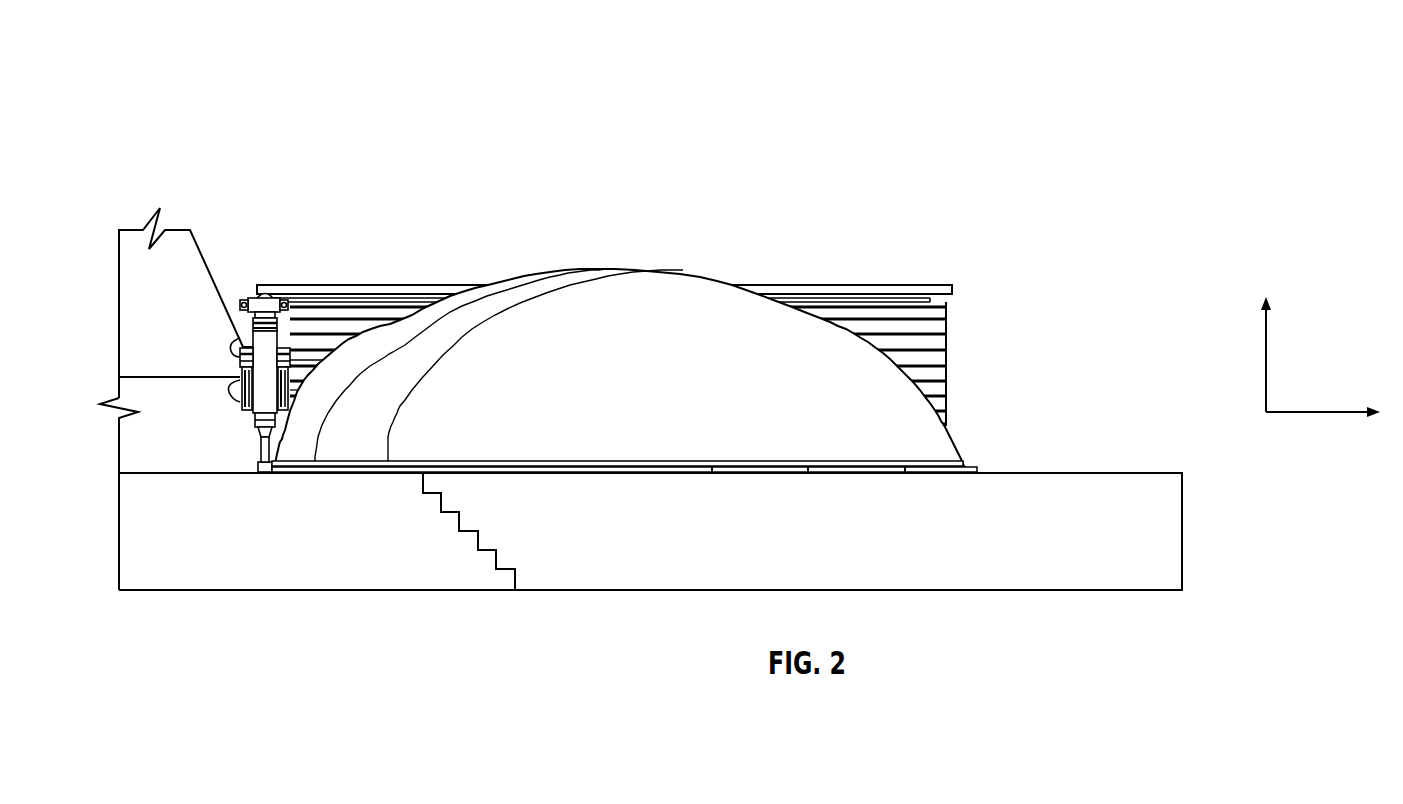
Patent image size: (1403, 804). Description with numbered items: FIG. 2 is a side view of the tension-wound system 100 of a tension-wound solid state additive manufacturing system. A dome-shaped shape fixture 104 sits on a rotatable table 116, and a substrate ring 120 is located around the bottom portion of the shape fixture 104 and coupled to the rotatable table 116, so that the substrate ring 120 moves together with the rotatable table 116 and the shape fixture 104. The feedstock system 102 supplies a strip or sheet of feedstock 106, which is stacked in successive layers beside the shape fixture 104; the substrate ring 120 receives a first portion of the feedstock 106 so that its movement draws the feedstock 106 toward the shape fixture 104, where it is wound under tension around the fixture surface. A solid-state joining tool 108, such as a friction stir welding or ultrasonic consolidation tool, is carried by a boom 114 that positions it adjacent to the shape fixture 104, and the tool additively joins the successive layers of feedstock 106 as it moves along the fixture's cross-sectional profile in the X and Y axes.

The tension-wound system 100 is at (1176, 174).
The feedstock system 102 is at (974, 299).
The shape fixture 104 is at (937, 440).
The feedstock 106 is at (937, 337).
The solid-state joining tool 108 is at (246, 420).
The boom 114 is at (222, 272).
The rotatable table 116 is at (1120, 484).
The substrate ring 120 is at (982, 465).